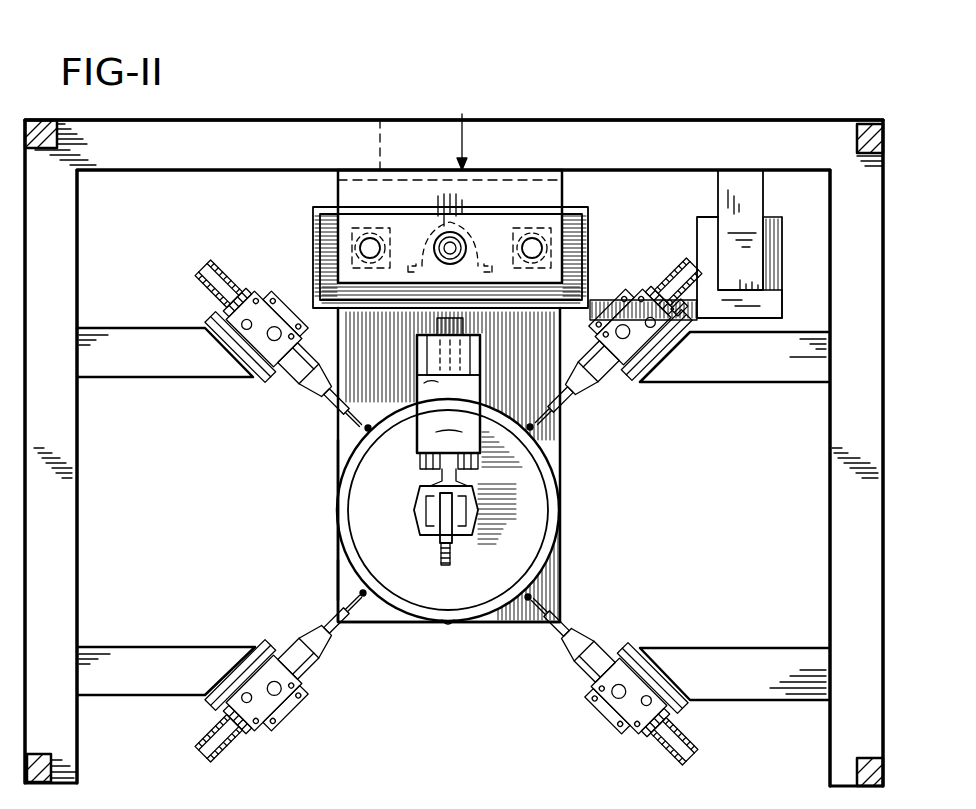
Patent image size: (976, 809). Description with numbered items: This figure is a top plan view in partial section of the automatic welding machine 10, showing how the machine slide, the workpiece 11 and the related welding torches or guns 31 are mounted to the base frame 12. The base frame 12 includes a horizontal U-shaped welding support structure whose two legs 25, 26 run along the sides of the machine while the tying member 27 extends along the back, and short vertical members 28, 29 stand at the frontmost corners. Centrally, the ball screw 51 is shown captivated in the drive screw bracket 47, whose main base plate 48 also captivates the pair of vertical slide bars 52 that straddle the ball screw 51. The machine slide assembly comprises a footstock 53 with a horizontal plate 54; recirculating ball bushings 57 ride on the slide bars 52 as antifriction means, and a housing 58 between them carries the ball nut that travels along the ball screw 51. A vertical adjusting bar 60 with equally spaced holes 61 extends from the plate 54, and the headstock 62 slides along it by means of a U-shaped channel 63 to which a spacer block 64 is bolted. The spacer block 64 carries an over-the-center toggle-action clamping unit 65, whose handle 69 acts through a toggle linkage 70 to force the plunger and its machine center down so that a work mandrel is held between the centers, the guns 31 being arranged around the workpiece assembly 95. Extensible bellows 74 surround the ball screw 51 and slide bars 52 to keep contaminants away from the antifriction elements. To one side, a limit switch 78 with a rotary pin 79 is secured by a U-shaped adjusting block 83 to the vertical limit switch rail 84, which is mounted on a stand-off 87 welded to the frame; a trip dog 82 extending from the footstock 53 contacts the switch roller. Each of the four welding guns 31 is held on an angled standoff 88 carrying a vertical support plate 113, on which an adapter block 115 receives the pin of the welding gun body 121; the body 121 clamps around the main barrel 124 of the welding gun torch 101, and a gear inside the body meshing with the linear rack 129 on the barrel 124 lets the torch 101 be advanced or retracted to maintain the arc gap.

The automatic welding machine 10 is at (330, 90).
The workpiece 11 is at (328, 520).
The base frame 12 is at (665, 118).
The leg of U-shaped welding support structure 25 is at (830, 578).
The leg of U-shaped welding support structure 26 is at (77, 434).
The tying member 27 is at (548, 130).
The short vertical member 28 is at (857, 772).
The short vertical member 29 is at (77, 784).
The welding gun 31 is at (318, 410).
The drive screw bracket 47 is at (460, 127).
The main base plate 48 is at (380, 130).
The ball screw 51 is at (448, 240).
The vertical slide bars 52 is at (370, 242).
The footstock 53 is at (330, 594).
The horizontal plate 54 is at (338, 442).
The recirculating ball bushings 57 is at (352, 242).
The housing 58 is at (441, 172).
The vertical adjusting bar 60 is at (426, 358).
The horizontally-drilled holes 61 is at (417, 390).
The headstock 62 is at (412, 443).
The U-shaped channel 63 is at (480, 374).
The spacer block 64 is at (469, 421).
The clamping unit 65 is at (430, 520).
The handle 69 is at (452, 556).
The toggle linkage 70 is at (470, 510).
The extensible bellows 74 is at (313, 264).
The limit switch 78 is at (770, 310).
The rotary pin 79 is at (690, 320).
The trip dog 82 is at (604, 300).
The limit switch adjusting block 83 is at (782, 266).
The limit switch rail 84 is at (746, 244).
The stand-off 87 is at (718, 204).
The standoff 88 is at (135, 334).
The workpiece assembly 95 is at (340, 568).
The welding gun torch 101 is at (540, 436).
The vertical support plate 113 is at (238, 366).
The adapter block 115 is at (282, 714).
The welding gun body 121 is at (300, 688).
The torch barrel 124 is at (222, 270).
The linear rack 129 is at (212, 720).